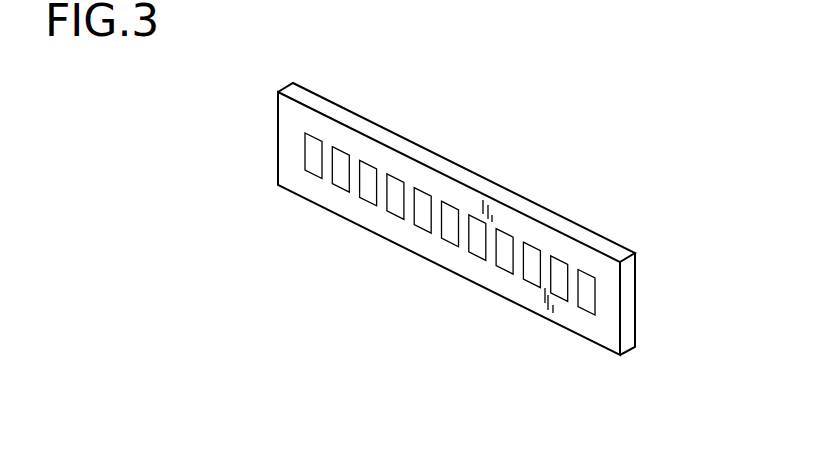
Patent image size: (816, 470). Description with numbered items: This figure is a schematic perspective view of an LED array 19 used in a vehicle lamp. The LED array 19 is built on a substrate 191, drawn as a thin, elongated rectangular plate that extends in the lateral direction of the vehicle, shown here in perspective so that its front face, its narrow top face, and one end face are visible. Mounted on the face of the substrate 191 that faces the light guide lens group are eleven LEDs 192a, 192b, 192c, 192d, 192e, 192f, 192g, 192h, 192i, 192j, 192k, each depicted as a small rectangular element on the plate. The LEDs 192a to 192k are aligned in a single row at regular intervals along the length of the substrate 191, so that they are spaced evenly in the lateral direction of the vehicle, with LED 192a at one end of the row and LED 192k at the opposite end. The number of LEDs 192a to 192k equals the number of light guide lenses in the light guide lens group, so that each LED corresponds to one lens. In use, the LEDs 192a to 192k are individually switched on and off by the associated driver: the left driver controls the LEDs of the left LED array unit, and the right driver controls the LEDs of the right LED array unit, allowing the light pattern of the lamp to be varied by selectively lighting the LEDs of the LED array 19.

The LED array 19 is at (436, 220).
The substrate 191 is at (621, 253).
The LED 192a is at (585, 308).
The LED 192b is at (558, 268).
The LED 192c is at (532, 253).
The LED 192d is at (504, 263).
The LED 192e is at (476, 248).
The LED 192f is at (449, 213).
The LED 192g is at (422, 198).
The LED 192h is at (392, 217).
The LED 192i is at (366, 204).
The LED 192j is at (341, 156).
The LED 192k is at (313, 142).